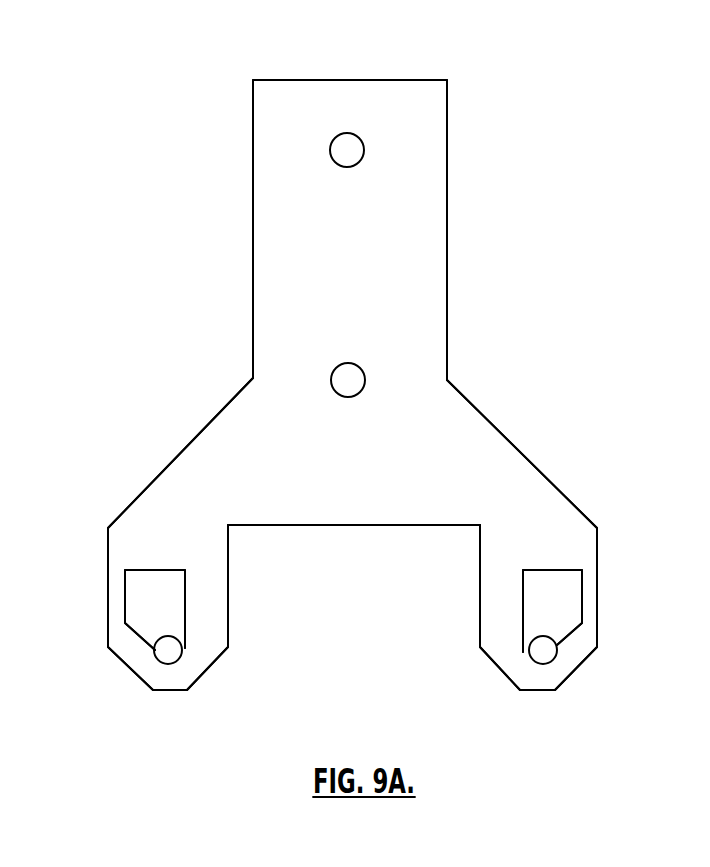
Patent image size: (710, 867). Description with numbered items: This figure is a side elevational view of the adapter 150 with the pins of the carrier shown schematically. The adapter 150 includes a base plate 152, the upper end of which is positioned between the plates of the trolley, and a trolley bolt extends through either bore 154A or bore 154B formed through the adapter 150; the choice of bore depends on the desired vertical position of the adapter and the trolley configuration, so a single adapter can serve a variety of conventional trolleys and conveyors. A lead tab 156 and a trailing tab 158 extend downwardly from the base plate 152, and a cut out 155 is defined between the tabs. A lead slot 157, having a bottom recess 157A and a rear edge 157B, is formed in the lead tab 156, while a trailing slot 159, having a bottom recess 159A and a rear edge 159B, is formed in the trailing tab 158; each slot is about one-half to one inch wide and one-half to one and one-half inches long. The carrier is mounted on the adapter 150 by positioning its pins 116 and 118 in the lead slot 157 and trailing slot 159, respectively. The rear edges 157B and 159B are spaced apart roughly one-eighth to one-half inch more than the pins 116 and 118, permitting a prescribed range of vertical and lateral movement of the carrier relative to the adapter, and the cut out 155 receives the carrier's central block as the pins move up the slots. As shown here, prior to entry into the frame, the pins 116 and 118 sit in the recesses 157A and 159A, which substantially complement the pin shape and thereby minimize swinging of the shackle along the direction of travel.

The adapter 150 is at (477, 210).
The base plate 152 is at (400, 90).
The bore 154A is at (334, 164).
The bore 154B is at (337, 392).
The cut out 155 is at (393, 525).
The lead tab 156 is at (138, 525).
The trailing tab 158 is at (568, 528).
The lead slot 157 is at (140, 598).
The bottom recess 157A is at (183, 652).
The rear edge 157B is at (178, 588).
The pin 116 is at (158, 657).
The trailing slot 159 is at (538, 612).
The bottom recess 159A is at (527, 658).
The rear edge 159B is at (568, 584).
The pin 118 is at (550, 652).